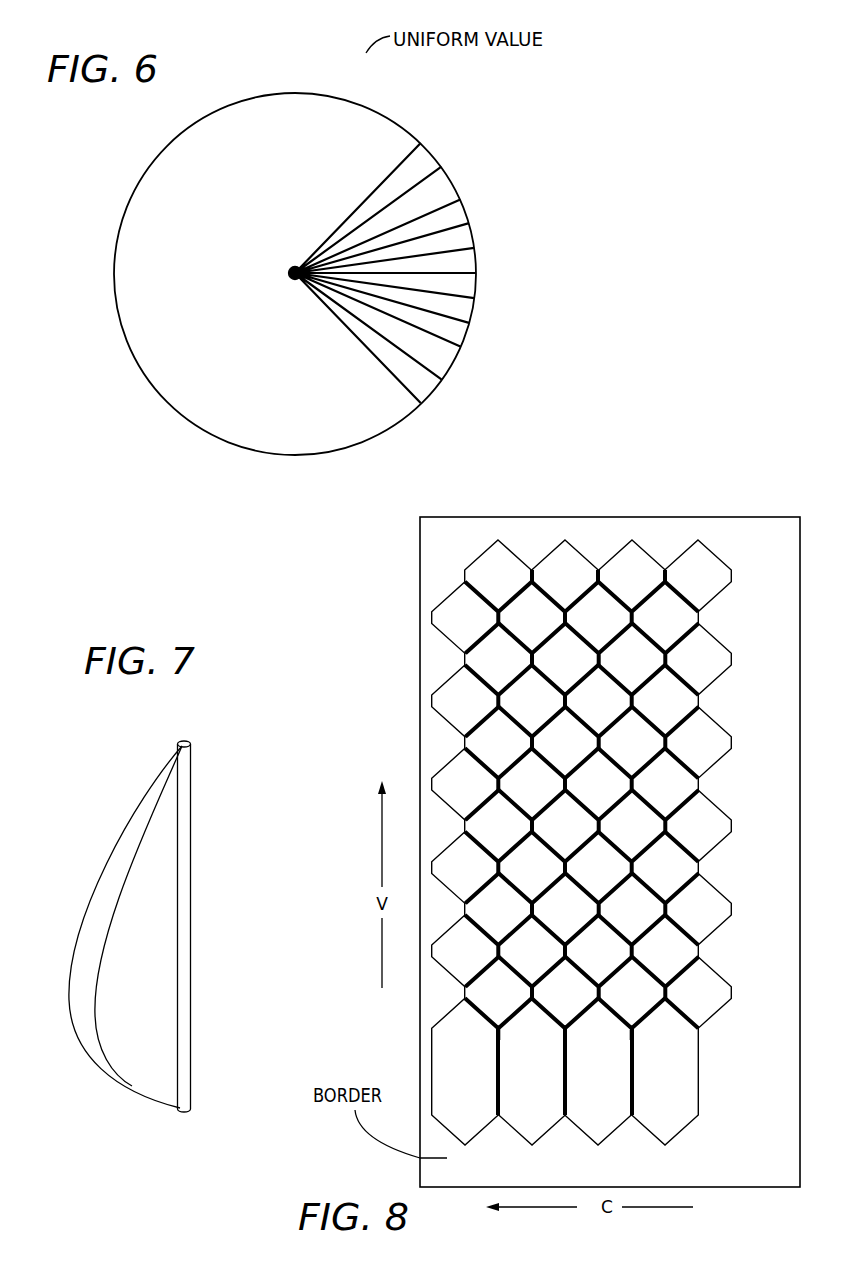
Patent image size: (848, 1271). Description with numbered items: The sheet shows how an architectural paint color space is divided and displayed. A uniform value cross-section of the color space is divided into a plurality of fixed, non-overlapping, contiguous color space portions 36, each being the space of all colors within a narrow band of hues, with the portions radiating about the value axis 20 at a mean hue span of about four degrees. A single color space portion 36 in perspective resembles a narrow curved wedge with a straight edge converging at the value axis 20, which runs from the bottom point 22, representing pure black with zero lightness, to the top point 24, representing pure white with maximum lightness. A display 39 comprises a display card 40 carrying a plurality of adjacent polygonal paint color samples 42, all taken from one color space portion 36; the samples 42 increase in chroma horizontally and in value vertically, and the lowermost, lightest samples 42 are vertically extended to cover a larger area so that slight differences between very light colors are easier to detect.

In FIG. 6, the value axis 20 is at (288, 273).
In FIG. 7, the value axis 20 is at (192, 947).
In FIG. 7, the bottom point of value axis 22 is at (185, 1111).
In FIG. 7, the top point of value axis 24 is at (185, 741).
In FIG. 6, the color space portion 36 is at (426, 167).
In FIG. 7, the color space portion 36 is at (267, 790).
In FIG. 8, the display 39 is at (566, 794).
In FIG. 8, the display card 40 is at (568, 516).
In FIG. 8, the paint color samples 42 is at (492, 663).